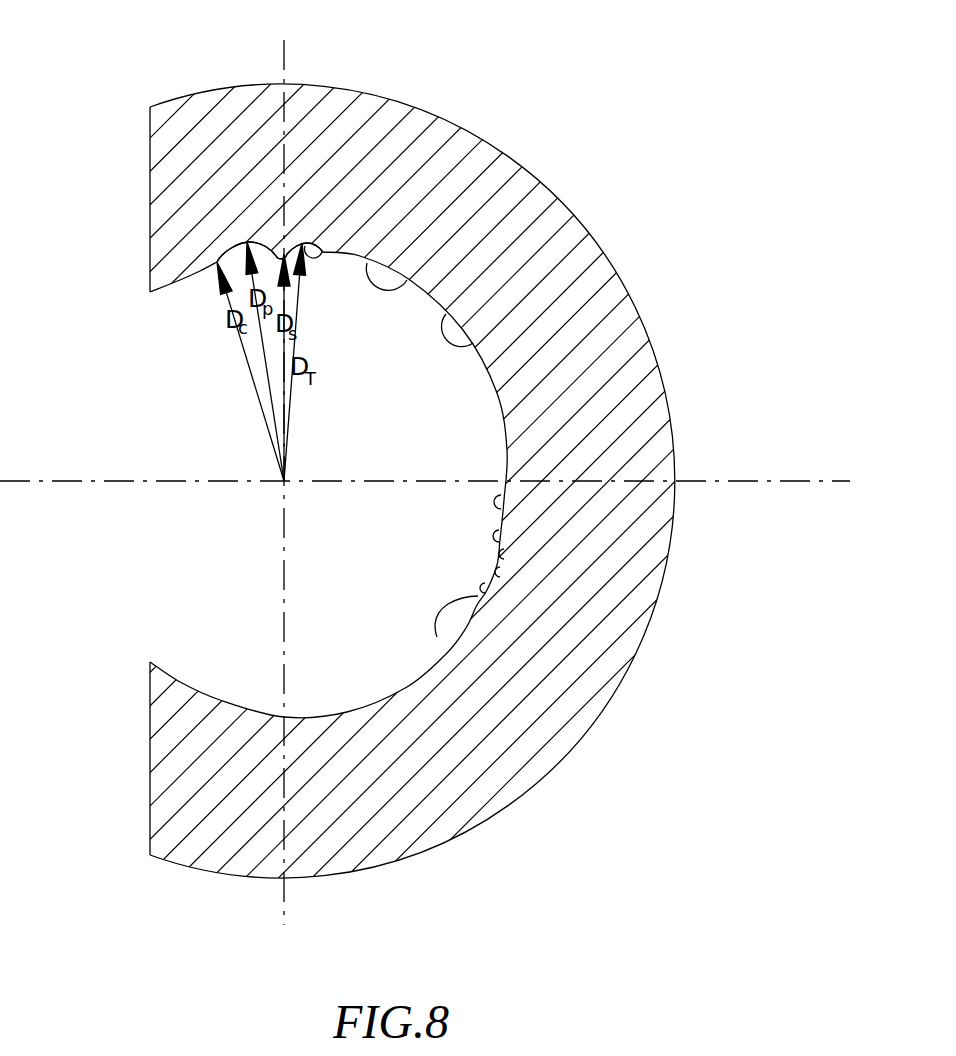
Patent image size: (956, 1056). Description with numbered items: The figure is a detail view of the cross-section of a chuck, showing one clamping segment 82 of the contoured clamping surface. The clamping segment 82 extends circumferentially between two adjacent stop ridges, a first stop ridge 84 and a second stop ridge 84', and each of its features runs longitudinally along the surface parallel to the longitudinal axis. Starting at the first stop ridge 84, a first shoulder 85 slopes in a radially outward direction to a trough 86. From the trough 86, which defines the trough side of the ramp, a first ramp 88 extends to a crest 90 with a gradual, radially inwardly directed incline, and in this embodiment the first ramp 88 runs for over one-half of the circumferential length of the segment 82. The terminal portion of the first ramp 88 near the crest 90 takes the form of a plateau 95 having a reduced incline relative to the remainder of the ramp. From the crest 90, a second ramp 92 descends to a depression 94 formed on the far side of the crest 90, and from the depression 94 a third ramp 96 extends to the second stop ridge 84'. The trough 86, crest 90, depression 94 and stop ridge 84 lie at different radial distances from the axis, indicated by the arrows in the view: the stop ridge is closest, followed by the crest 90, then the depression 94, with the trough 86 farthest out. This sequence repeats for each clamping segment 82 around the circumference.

The clamping segment 82 is at (470, 343).
The first stop ridge 84 is at (241, 138).
The second stop ridge 84' is at (518, 733).
The first shoulder 85 is at (287, 250).
The trough 86 is at (305, 245).
The first ramp 88 is at (420, 272).
The crest 90 is at (502, 540).
The second ramp 92 is at (506, 558).
The depression 94 is at (503, 577).
The plateau 95 is at (504, 510).
The third ramp 96 is at (481, 594).